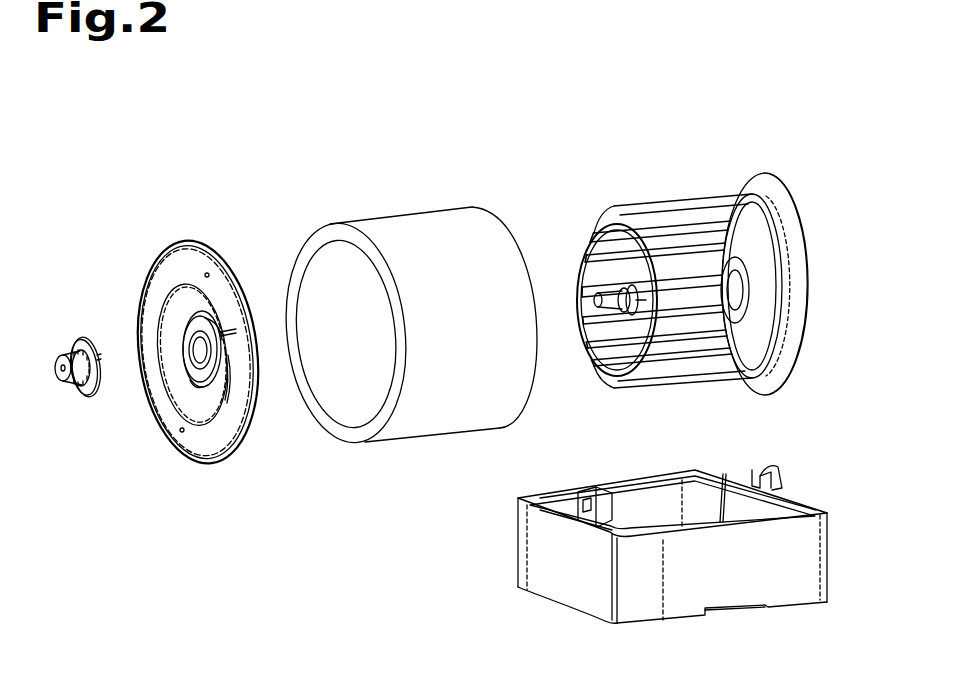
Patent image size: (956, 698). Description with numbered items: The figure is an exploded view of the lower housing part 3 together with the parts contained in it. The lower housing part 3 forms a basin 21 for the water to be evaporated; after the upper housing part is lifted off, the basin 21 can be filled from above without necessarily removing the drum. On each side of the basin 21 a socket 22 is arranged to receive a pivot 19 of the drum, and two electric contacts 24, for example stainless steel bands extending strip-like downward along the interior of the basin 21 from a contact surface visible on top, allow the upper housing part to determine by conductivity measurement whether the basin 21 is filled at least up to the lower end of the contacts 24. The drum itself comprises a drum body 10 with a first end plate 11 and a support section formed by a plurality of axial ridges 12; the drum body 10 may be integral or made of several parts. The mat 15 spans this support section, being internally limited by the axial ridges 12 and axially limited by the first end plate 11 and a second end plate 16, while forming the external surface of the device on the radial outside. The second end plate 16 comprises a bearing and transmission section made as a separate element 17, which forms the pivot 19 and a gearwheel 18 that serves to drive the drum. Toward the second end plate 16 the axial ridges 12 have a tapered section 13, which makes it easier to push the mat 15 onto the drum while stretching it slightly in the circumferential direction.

The lower housing part 3 is at (610, 505).
The drum body 10 is at (700, 240).
The first end plate 11 is at (762, 190).
The axial ridges 12 is at (693, 207).
The tapered section 13 is at (627, 215).
The mat 15 is at (397, 230).
The second end plate 16 is at (190, 262).
The separate element 17 is at (82, 338).
The gearwheel 18 is at (87, 338).
The pivot 19 is at (66, 350).
The basin 21 is at (540, 557).
The socket 22 is at (768, 465).
The electric contacts 24 is at (612, 500).